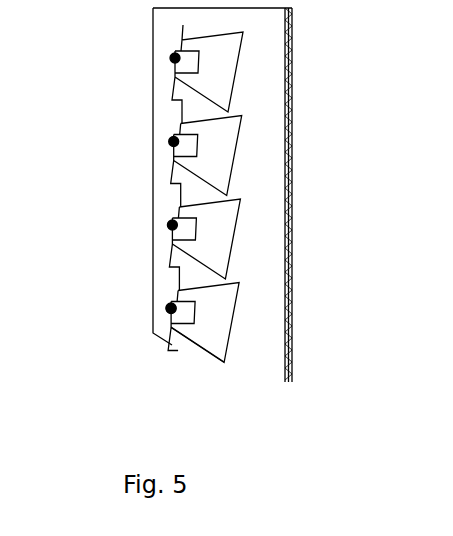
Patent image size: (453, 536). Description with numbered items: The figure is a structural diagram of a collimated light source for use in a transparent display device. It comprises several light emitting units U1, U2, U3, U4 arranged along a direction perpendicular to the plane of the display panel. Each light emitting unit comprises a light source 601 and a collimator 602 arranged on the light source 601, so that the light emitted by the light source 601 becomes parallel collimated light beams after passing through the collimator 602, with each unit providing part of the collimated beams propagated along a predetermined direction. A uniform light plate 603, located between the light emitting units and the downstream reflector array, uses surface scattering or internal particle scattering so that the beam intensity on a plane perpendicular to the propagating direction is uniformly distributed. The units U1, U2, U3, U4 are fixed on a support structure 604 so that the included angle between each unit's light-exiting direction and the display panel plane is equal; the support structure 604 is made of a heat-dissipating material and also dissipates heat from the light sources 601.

The light source 601 is at (171, 305).
The collimator 602 is at (208, 333).
The uniform light plate 603 is at (292, 153).
The support structure 604 is at (168, 22).
The light emitting unit U1 is at (208, 60).
The light emitting unit U2 is at (221, 162).
The light emitting unit U3 is at (220, 245).
The light emitting unit U4 is at (220, 323).